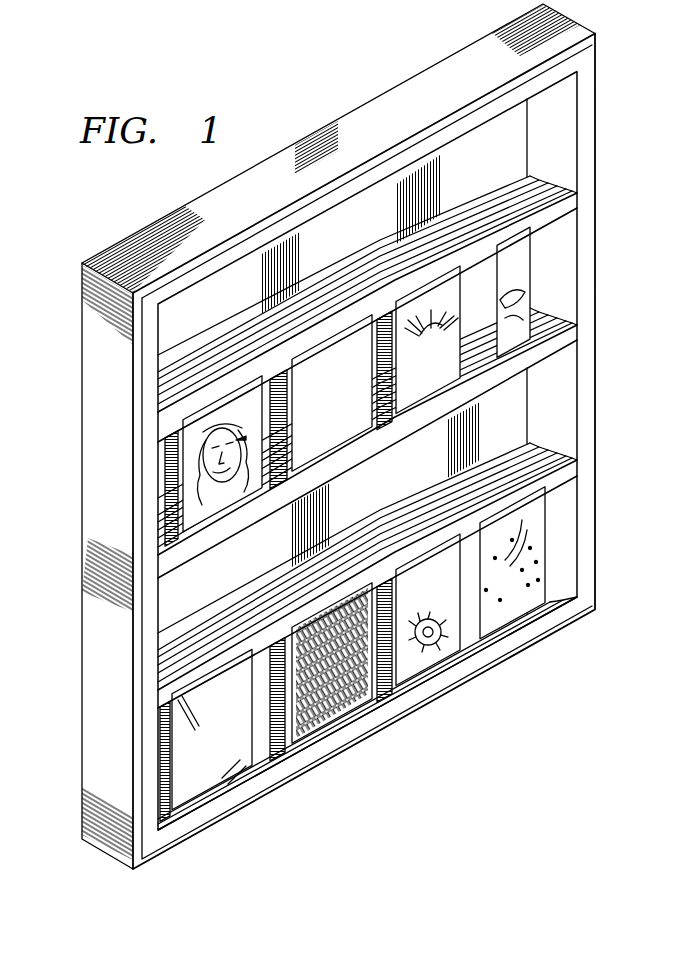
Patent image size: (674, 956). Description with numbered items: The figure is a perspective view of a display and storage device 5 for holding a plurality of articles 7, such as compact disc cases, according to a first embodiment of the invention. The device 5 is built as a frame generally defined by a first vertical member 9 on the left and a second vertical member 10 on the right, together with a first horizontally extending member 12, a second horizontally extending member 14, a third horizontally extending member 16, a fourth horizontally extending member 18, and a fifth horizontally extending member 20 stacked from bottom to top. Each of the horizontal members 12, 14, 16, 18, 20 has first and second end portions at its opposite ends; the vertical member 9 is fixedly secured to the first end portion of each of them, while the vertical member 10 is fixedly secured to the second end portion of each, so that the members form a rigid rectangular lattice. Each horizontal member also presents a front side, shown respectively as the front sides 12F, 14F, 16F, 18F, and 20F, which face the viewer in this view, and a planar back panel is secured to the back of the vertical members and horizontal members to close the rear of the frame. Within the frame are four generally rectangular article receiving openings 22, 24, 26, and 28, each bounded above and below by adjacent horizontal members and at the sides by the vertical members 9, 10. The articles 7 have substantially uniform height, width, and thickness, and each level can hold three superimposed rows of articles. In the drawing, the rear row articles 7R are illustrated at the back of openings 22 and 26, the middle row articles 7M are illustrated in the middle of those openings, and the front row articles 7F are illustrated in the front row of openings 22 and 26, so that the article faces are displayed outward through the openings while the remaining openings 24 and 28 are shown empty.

The display and storage device 5 is at (454, 767).
The articles 7 is at (351, 717).
The front row articles 7F is at (207, 512).
The middle row articles 7M is at (330, 435).
The rear row articles 7R is at (528, 282).
The first vertical member 9 is at (90, 503).
The second vertical member 10 is at (587, 232).
The first horizontally extending member 12 is at (462, 675).
The front side of first horizontal member 12F is at (233, 802).
The second horizontally extending member 14 is at (207, 680).
The front side of second horizontal member 14F is at (477, 527).
The third horizontally extending member 16 is at (405, 433).
The front side of third horizontal member 16F is at (185, 555).
The fourth horizontally extending member 18 is at (415, 289).
The front side of fourth horizontal member 18F is at (188, 417).
The fifth horizontally extending member 20 is at (437, 72).
The front side of fifth horizontal member 20F is at (207, 273).
The first article receiving opening 22 is at (560, 557).
The second article receiving opening 24 is at (554, 403).
The third article receiving opening 26 is at (552, 293).
The fourth article receiving opening 28 is at (553, 128).